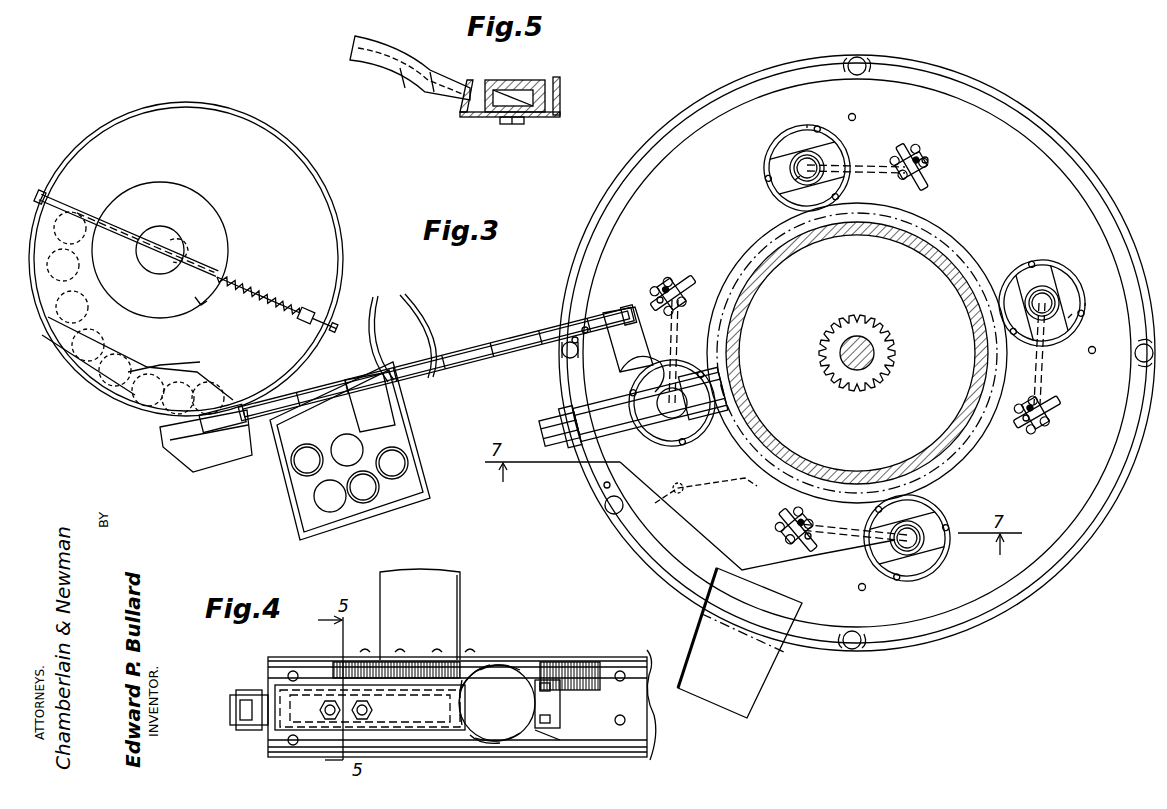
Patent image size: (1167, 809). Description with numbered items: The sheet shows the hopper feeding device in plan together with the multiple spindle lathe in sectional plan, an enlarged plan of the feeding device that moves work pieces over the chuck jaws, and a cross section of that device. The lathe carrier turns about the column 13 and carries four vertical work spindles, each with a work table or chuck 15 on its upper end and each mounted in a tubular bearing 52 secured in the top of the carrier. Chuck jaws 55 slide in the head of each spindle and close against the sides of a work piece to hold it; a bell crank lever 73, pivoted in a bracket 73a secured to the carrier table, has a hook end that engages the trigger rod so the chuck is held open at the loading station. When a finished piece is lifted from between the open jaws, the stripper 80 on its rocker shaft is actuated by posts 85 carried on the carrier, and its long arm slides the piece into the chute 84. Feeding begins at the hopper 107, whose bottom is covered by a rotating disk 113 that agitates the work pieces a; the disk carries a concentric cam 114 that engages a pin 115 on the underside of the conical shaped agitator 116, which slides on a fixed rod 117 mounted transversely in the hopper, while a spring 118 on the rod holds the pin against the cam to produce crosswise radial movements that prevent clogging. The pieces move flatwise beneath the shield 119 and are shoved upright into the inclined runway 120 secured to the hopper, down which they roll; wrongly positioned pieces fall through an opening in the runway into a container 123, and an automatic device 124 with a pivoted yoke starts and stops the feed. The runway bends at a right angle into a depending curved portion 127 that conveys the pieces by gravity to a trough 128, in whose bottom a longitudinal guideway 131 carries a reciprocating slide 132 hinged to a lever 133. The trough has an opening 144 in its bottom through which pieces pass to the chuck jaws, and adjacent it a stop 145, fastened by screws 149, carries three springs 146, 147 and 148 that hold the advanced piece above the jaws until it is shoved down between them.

In FIG. 3, the column 13 is at (960, 440).
In FIG. 3, the work table or chuck 15 is at (777, 160).
In FIG. 3, the tubular bearing 52 is at (836, 142).
In FIG. 3, the chuck jaws 55 is at (795, 181).
In FIG. 3, the bell crank lever 73 is at (932, 190).
In FIG. 3, the bracket 73a is at (935, 164).
In FIG. 3, the stripper 80 is at (715, 489).
In FIG. 3, the chute 84 is at (764, 670).
In FIG. 3, the posts 85 is at (857, 117).
In FIG. 3, the hopper 107 is at (335, 218).
In FIG. 3, the disk 113 is at (322, 268).
In FIG. 3, the cam 114 is at (207, 242).
In FIG. 3, the pin 115 is at (157, 276).
In FIG. 3, the conical shaped agitator 116 is at (216, 312).
In FIG. 3, the fixed rod 117 is at (304, 320).
In FIG. 3, the spring 118 is at (270, 296).
In FIG. 3, the shield 119 is at (171, 372).
In FIG. 3, the inclined runway 120 is at (258, 432).
In FIG. 3, the container 123 is at (415, 490).
In FIG. 3, the automatic device 124 is at (422, 370).
In FIG. 5, the depending curved portion 127 is at (405, 82).
In FIG. 4, the depending curved portion 127 is at (452, 596).
In FIG. 5, the trough 128 is at (560, 106).
In FIG. 4, the trough 128 is at (283, 665).
In FIG. 5, the longitudinal guideway 131 is at (520, 115).
In FIG. 4, the longitudinal guideway 131 is at (354, 652).
In FIG. 5, the slide 132 is at (518, 82).
In FIG. 4, the slide 132 is at (275, 730).
In FIG. 4, the lever 133 is at (232, 705).
In FIG. 4, the opening 144 is at (479, 702).
In FIG. 4, the stop 145 is at (552, 731).
In FIG. 4, the spring 146 is at (497, 704).
In FIG. 4, the spring 147 is at (492, 668).
In FIG. 4, the spring 148 is at (500, 737).
In FIG. 4, the screws 149 is at (560, 710).
In FIG. 3, the work pieces a is at (90, 318).